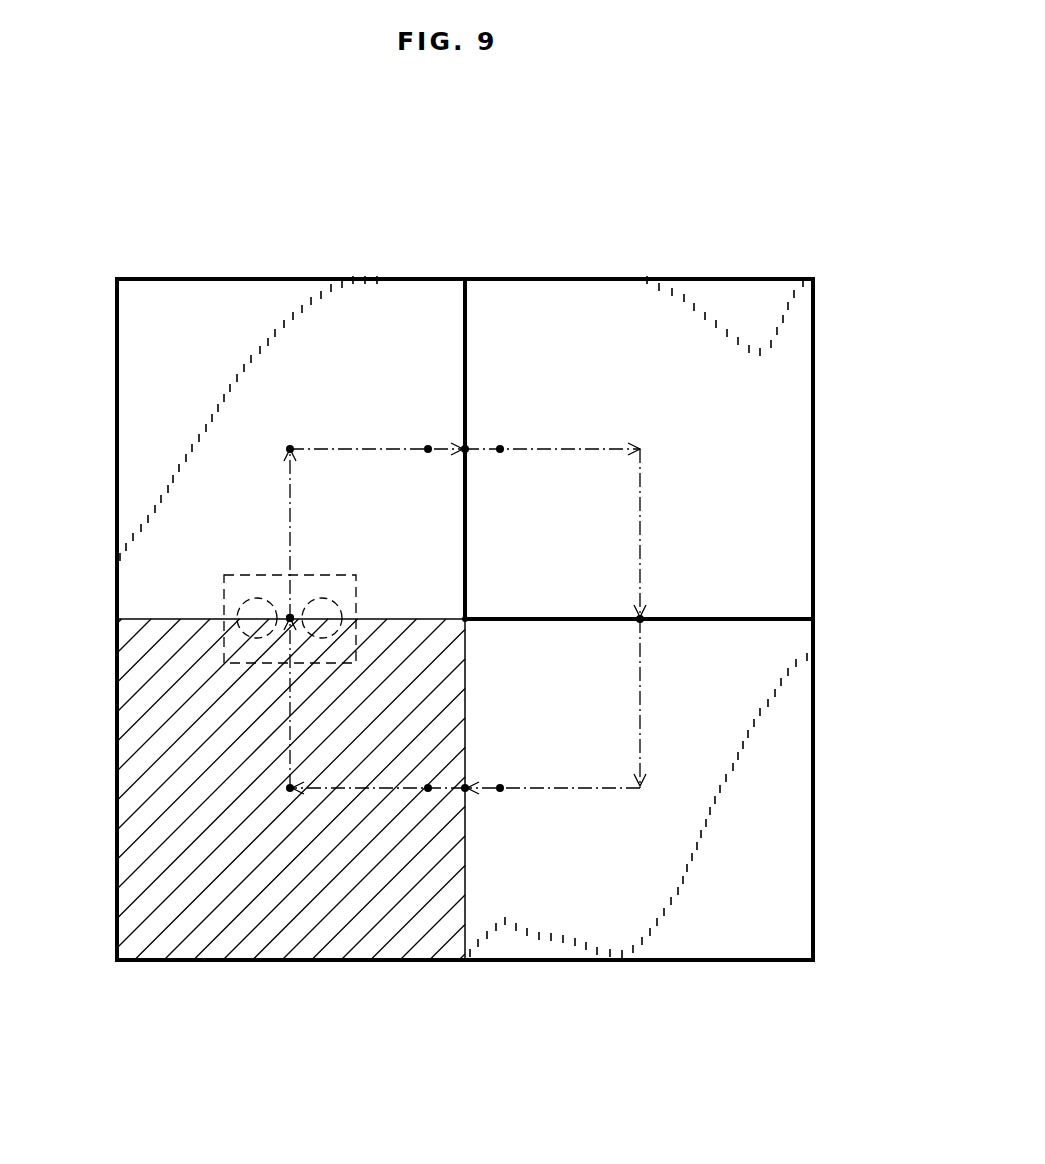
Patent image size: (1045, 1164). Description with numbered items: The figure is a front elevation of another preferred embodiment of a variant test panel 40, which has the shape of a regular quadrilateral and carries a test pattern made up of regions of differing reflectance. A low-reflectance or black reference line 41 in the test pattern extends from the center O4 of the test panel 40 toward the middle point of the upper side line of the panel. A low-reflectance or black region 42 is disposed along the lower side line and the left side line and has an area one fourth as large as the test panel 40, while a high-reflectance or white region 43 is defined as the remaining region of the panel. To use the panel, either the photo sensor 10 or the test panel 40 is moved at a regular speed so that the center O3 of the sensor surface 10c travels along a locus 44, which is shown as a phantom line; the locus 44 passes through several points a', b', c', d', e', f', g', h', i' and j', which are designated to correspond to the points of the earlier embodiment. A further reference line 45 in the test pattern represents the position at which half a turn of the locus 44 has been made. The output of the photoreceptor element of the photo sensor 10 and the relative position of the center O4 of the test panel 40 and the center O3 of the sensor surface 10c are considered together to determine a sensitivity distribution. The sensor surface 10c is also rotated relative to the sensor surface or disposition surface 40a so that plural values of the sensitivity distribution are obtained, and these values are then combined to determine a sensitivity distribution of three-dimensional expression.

The test panel 40 is at (668, 272).
The disposition surface 40a is at (805, 913).
The reference line 41 is at (462, 300).
The black region 42 is at (155, 840).
The white region 43 is at (142, 418).
The locus 44 is at (582, 445).
The reference line 45 is at (752, 617).
The photo sensor 10 is at (225, 580).
The sensor surface 10c is at (237, 607).
The center of the sensor surface O3 is at (288, 615).
The center of the test panel O4 is at (463, 617).
The point a' is at (312, 579).
The point b' is at (293, 414).
The point c' is at (426, 485).
The point d' is at (487, 414).
The point e' is at (505, 486).
The point f' is at (662, 650).
The point g' is at (525, 820).
The point h' is at (485, 749).
The point i' is at (462, 820).
The point j' is at (288, 901).